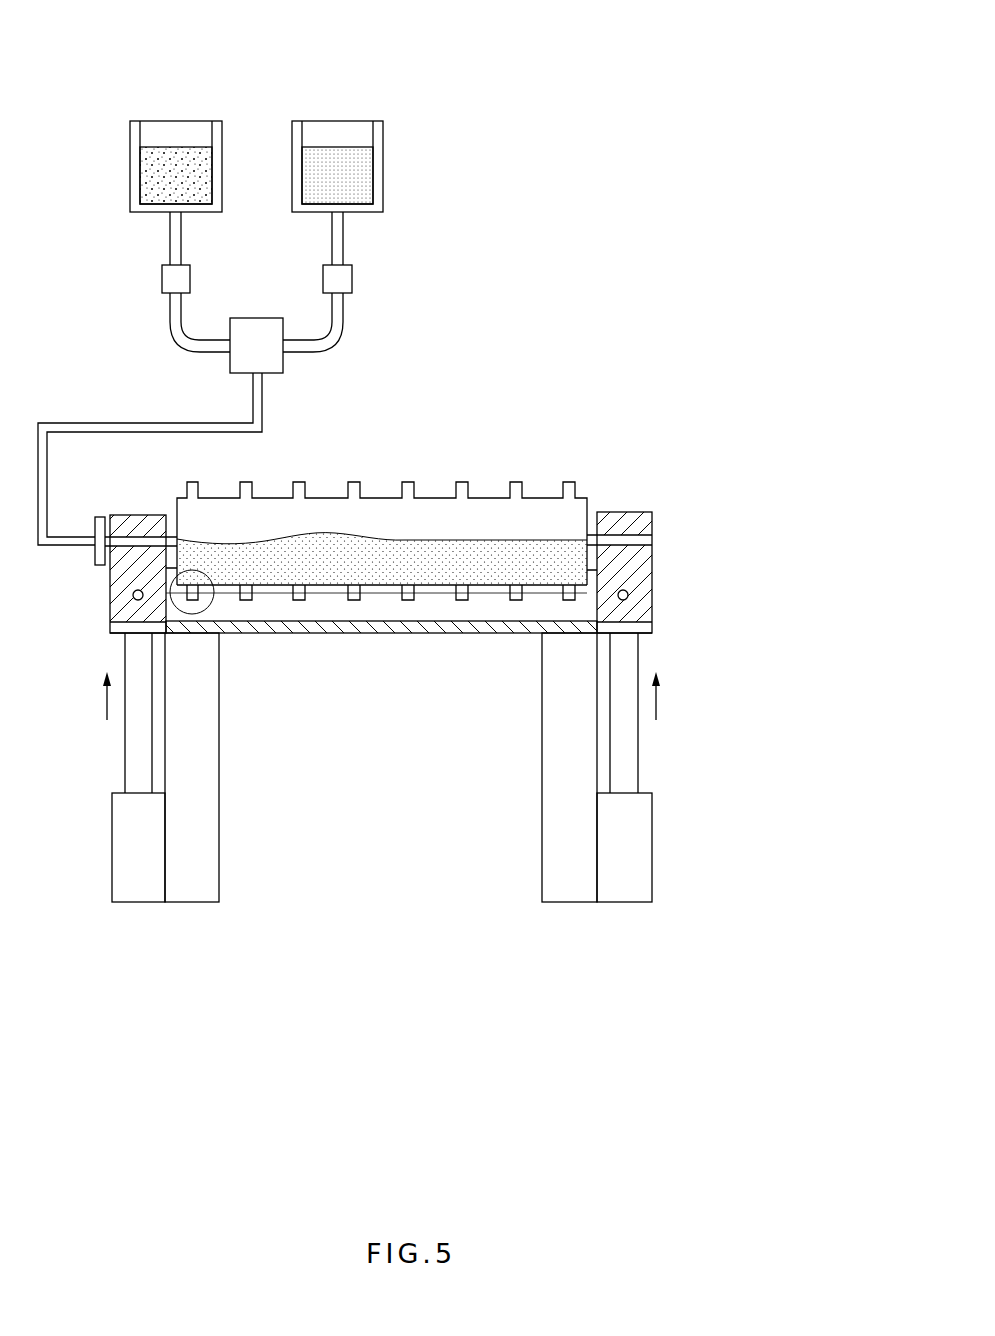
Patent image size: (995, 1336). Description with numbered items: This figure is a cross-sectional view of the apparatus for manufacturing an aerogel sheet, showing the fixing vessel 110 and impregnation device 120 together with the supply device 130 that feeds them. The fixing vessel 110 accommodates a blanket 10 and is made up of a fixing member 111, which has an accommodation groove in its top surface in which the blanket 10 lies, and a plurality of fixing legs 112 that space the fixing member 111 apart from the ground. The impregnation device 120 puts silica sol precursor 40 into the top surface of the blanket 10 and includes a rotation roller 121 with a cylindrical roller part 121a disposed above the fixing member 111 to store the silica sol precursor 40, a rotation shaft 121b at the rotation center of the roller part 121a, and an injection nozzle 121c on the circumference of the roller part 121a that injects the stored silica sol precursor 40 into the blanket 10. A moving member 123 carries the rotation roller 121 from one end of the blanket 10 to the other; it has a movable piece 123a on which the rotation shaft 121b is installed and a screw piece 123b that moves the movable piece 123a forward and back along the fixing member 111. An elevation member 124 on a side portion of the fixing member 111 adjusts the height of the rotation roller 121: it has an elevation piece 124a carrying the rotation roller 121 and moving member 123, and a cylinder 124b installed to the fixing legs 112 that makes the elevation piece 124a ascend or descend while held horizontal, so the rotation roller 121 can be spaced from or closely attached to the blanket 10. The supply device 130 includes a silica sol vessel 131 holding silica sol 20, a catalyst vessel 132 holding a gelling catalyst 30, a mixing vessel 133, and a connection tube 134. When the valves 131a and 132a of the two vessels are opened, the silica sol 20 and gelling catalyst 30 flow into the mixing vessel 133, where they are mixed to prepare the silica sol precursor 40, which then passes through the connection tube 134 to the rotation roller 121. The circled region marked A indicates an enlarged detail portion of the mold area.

The blanket 10 is at (393, 615).
The silica sol 20 is at (207, 163).
The gelling catalyst 30 is at (364, 176).
The silica sol precursor 40 is at (383, 555).
The fixing vessel 110 is at (465, 697).
The fixing member 111 is at (482, 633).
The fixing legs 112 is at (555, 748).
The impregnation device 120 is at (822, 720).
The rotation roller 121 is at (640, 403).
The roller part 121a is at (487, 497).
The rotation shaft 121b is at (630, 542).
The injection nozzle 121c is at (567, 497).
The moving member 123 is at (760, 556).
The movable piece 123a is at (625, 560).
The screw piece 123b is at (628, 596).
The elevation member 124 is at (757, 632).
The elevation piece 124a is at (653, 627).
The cylinder 124b is at (643, 847).
The supply device 130 is at (75, 53).
The silica sol vessel 131 is at (174, 121).
The valve 131a is at (162, 279).
The catalyst vessel 132 is at (337, 121).
The valve 132a is at (352, 279).
The mixing vessel 133 is at (260, 318).
The connection tube 134 is at (73, 422).
The enlarged portion A is at (207, 611).